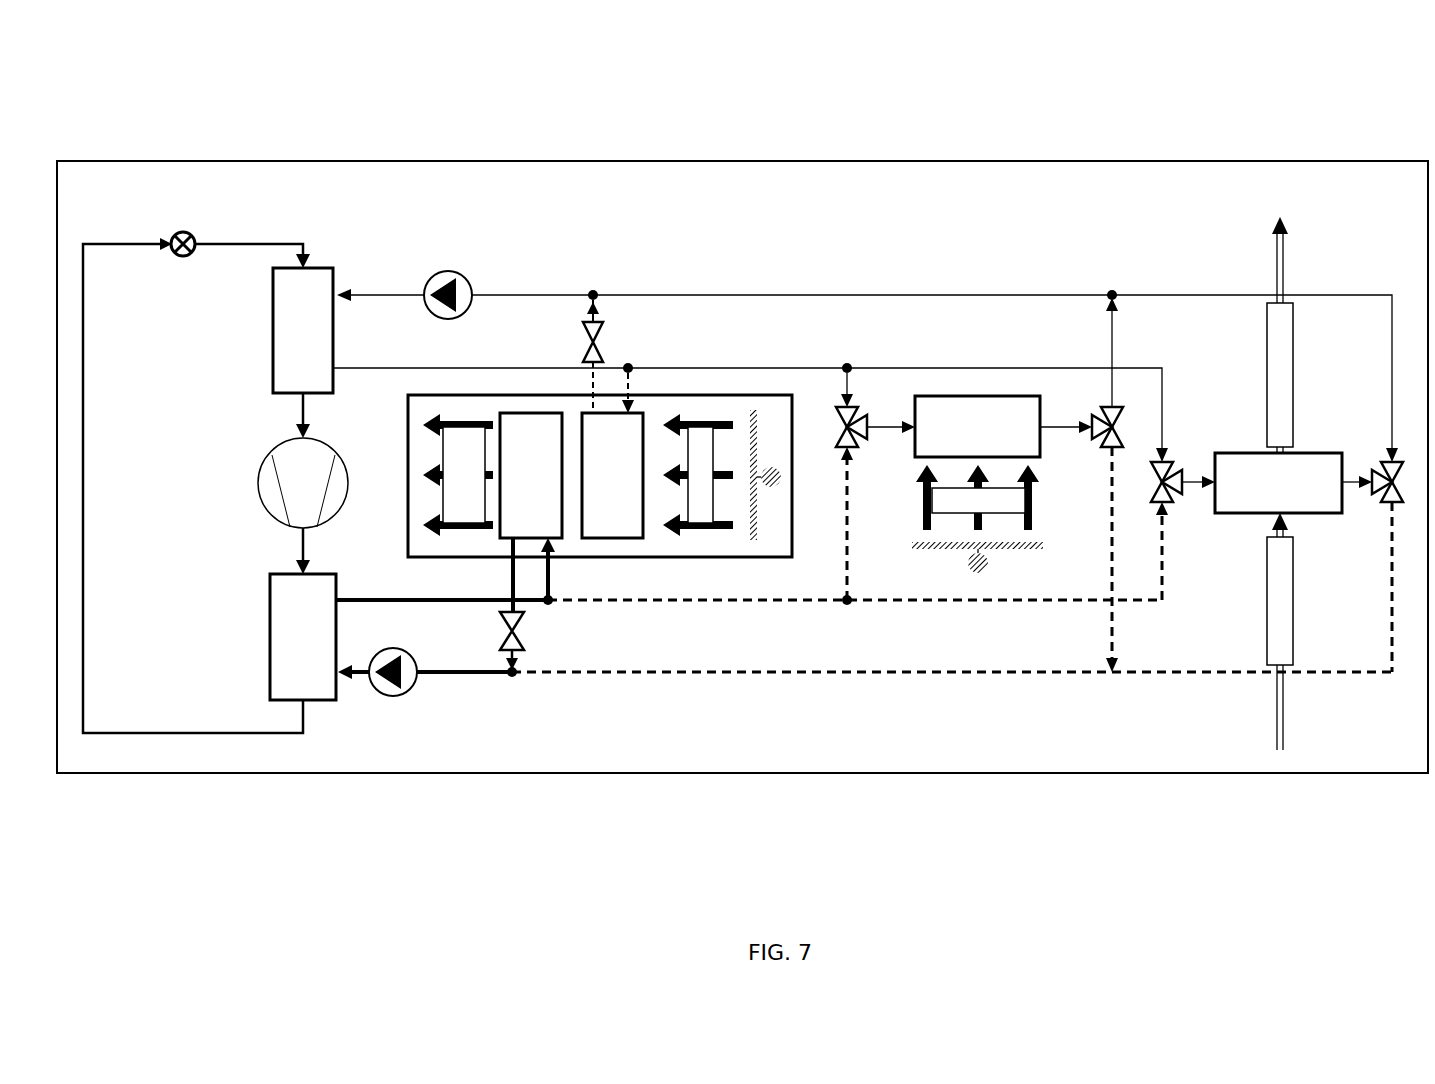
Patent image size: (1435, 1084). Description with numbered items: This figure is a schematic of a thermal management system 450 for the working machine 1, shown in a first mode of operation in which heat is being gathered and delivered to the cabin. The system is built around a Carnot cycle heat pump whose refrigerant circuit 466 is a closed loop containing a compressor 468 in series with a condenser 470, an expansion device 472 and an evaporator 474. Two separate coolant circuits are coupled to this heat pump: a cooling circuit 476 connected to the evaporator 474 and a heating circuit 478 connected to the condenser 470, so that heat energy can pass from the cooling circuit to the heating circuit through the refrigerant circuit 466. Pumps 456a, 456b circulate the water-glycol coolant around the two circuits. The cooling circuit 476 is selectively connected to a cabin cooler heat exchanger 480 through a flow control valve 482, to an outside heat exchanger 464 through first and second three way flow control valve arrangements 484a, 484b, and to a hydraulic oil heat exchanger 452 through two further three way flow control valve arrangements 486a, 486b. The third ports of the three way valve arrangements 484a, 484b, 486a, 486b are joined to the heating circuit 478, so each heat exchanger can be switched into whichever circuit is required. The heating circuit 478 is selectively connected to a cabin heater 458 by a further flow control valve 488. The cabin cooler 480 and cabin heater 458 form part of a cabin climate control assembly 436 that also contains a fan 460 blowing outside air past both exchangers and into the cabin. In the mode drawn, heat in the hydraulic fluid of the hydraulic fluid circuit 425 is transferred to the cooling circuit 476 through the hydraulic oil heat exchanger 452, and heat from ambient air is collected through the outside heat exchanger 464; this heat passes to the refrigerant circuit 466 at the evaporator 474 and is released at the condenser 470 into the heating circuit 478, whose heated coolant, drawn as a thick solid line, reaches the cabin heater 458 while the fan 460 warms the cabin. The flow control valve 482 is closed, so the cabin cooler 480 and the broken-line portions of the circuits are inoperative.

The working machine 1 is at (775, 160).
The hydraulic fluid circuit 425 is at (1338, 212).
The cabin climate control assembly 436 is at (770, 395).
The thermal management system 450 is at (482, 222).
The hydraulic oil heat exchanger 452 is at (1312, 515).
The pump 456a is at (433, 272).
The pump 456b is at (395, 697).
The cabin heater 458 is at (518, 413).
The fan 460 is at (760, 420).
The outside heat exchanger 464 is at (1023, 396).
The refrigerant circuit 466 is at (188, 733).
The compressor 468 is at (263, 505).
The condenser 470 is at (270, 624).
The expansion device 472 is at (183, 230).
The evaporator 474 is at (318, 268).
The cooling circuit 476 is at (668, 293).
The heating circuit 478 is at (550, 677).
The cabin cooler heat exchanger 480 is at (645, 422).
The flow control valve 482 is at (603, 338).
The first three way flow control valve arrangement 484a is at (858, 412).
The second three way flow control valve arrangement 484b is at (1120, 417).
The three way flow control valve arrangement 486a is at (1175, 467).
The three way flow control valve arrangement 486b is at (1382, 470).
The flow control valve 488 is at (520, 628).